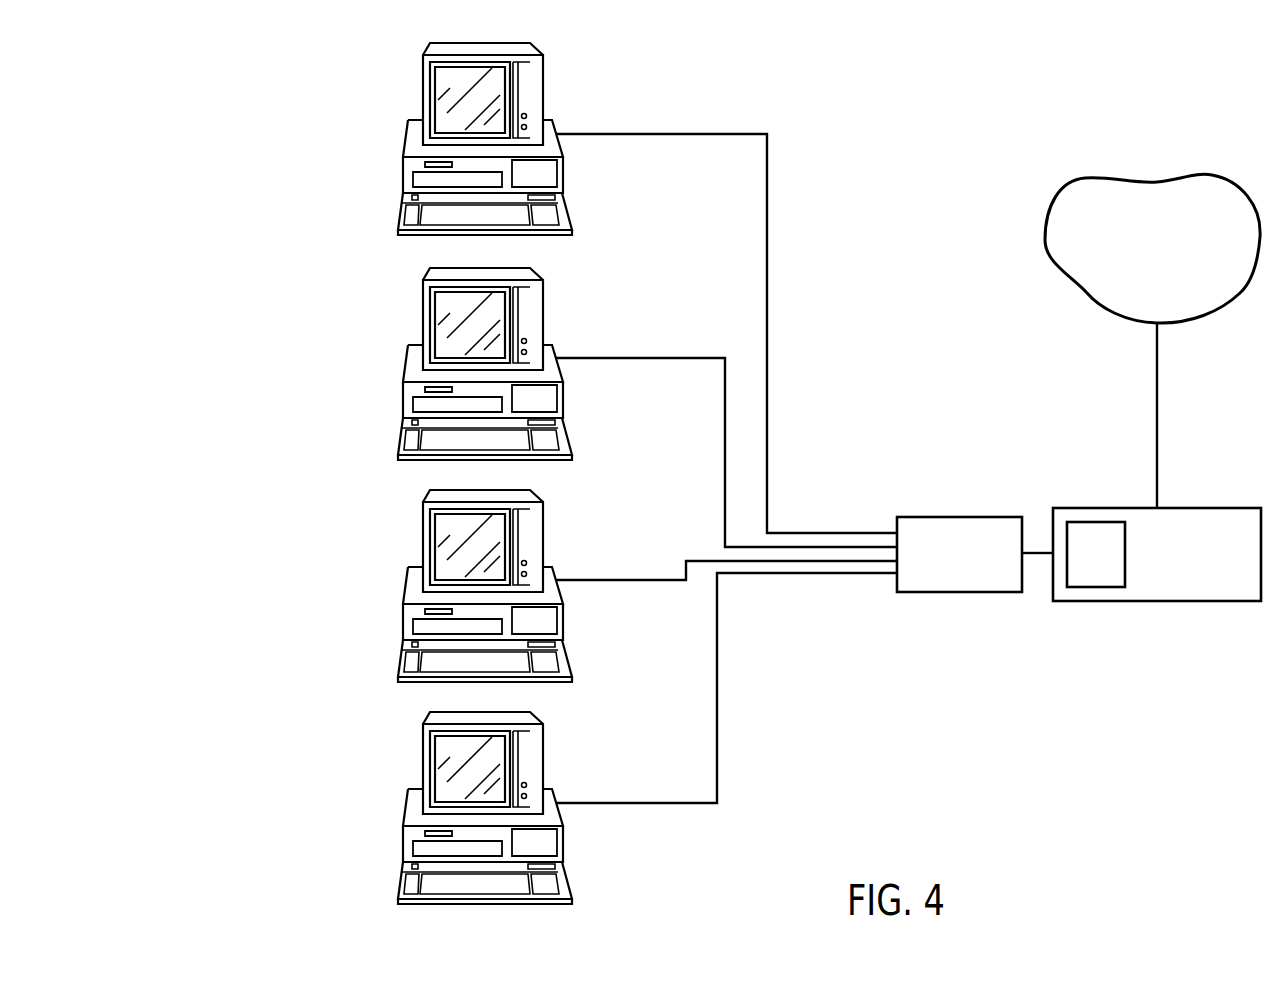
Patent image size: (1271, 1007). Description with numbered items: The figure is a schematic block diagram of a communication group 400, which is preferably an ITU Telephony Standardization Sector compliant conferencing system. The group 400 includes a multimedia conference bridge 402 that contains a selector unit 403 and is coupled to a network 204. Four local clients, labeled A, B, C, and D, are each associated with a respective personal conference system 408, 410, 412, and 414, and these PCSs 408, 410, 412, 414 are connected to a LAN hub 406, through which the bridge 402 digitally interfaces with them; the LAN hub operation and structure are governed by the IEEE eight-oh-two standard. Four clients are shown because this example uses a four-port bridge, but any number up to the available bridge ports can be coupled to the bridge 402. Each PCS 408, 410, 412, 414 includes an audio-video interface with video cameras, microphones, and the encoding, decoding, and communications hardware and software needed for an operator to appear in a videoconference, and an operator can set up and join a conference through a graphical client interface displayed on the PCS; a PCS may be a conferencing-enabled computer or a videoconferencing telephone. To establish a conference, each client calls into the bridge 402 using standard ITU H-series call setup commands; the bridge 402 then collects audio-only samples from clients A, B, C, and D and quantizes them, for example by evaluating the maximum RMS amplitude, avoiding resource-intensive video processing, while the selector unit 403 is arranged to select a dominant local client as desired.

The communication group 400 is at (212, 79).
The personal conference system 408 is at (421, 92).
The personal conference system 410 is at (421, 305).
The personal conference system 412 is at (421, 533).
The personal conference system 414 is at (421, 758).
The LAN hub 406 is at (937, 593).
The conference bridge 402 is at (1197, 508).
The selector unit 403 is at (1078, 566).
The network 204 is at (1137, 258).